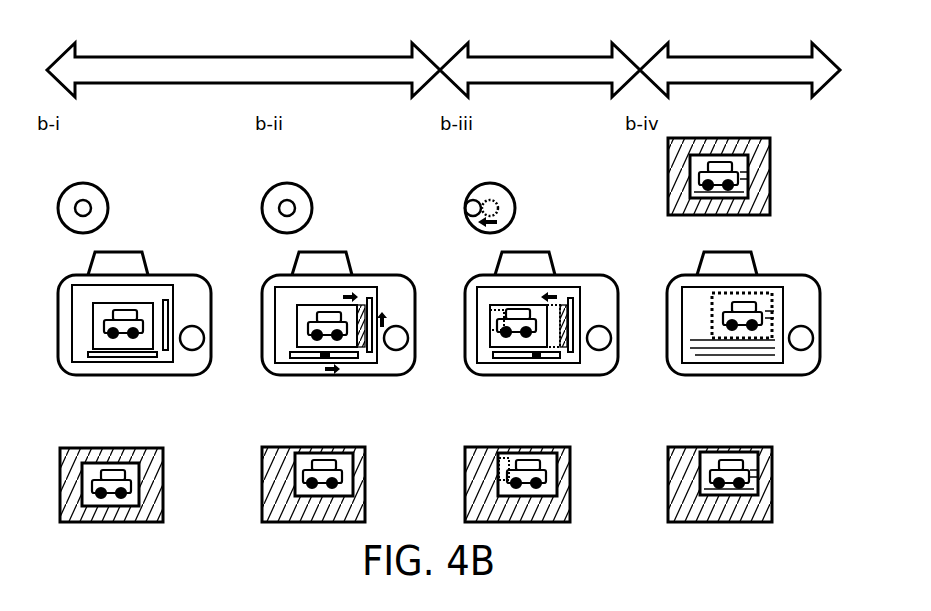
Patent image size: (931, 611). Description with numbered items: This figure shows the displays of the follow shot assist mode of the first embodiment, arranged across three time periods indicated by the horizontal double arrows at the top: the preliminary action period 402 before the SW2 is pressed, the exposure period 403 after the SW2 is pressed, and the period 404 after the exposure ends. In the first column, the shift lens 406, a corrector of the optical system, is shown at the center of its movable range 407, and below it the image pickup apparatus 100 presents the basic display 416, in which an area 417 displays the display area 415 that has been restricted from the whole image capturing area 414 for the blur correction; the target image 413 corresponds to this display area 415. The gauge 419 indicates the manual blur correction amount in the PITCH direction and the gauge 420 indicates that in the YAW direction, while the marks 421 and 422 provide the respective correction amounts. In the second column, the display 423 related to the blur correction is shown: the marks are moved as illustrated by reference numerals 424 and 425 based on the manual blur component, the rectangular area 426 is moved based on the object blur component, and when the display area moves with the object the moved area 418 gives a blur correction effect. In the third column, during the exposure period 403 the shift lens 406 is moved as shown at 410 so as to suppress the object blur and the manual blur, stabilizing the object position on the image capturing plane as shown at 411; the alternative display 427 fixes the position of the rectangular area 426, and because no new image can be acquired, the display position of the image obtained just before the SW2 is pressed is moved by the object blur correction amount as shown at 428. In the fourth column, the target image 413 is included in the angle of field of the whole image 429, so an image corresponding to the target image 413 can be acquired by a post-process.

The image pickup apparatus 100 is at (150, 275).
The preliminary action period 402 is at (382, 57).
The exposure period 403 is at (582, 57).
The period after exposure 404 is at (783, 57).
The shift lens 406 is at (77, 204).
The movable range 407 is at (97, 189).
The moved shift lens 410 is at (466, 208).
The stabilized object position 411 is at (508, 455).
The target image 413 is at (712, 295).
The whole image capturing area 414 is at (163, 455).
The display area 415 is at (139, 486).
The basic display 416 is at (177, 291).
The area for displaying the display area 417 is at (80, 301).
The moved area 418 is at (357, 478).
The gauge of manual blur correction amount in PITCH direction 419 is at (172, 352).
The gauge of manual blur correction amount in YAW direction 420 is at (77, 348).
The mark 421 is at (170, 320).
The mark 422 is at (122, 357).
The display related to blur correction 423 is at (366, 330).
The moved mark 424 is at (375, 312).
The moved mark 425 is at (345, 356).
The rectangular area 426 is at (376, 287).
The illustrative display 427 is at (585, 290).
The moved display position 428 is at (486, 301).
The whole image 429 is at (790, 290).